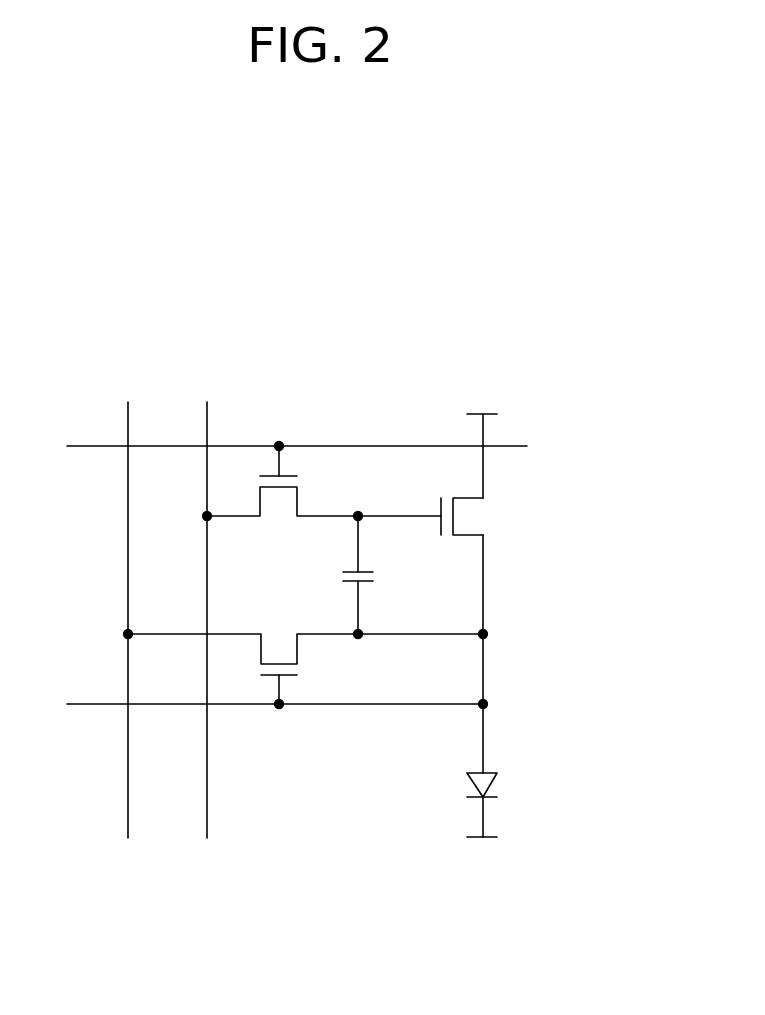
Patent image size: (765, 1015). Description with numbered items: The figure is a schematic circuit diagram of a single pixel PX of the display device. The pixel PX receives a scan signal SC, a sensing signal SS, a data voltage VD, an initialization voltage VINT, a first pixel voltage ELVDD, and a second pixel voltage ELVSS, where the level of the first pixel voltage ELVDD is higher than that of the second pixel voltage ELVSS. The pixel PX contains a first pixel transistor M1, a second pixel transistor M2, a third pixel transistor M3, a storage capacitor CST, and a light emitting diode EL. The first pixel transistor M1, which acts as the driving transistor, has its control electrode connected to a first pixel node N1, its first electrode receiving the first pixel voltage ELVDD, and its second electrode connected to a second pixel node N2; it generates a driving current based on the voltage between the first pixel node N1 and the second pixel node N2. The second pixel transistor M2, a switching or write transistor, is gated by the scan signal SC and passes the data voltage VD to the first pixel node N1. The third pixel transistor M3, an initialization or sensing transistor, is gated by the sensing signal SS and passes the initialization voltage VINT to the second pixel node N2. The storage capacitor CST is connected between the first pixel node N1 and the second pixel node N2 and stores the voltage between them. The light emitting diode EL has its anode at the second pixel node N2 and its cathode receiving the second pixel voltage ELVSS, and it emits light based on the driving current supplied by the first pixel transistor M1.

The pixel PX is at (615, 327).
The scan signal SC is at (278, 451).
The sensing signal SS is at (256, 708).
The initialization voltage VINT is at (128, 605).
The data voltage VD is at (207, 605).
The first pixel voltage ELVDD is at (482, 440).
The second pixel voltage ELVSS is at (482, 855).
The first pixel transistor M1 is at (434, 566).
The second pixel transistor M2 is at (281, 496).
The third pixel transistor M3 is at (304, 656).
The storage capacitor CST is at (380, 575).
The first pixel node N1 is at (357, 500).
The second pixel node N2 is at (500, 697).
The light emitting diode EL is at (497, 805).